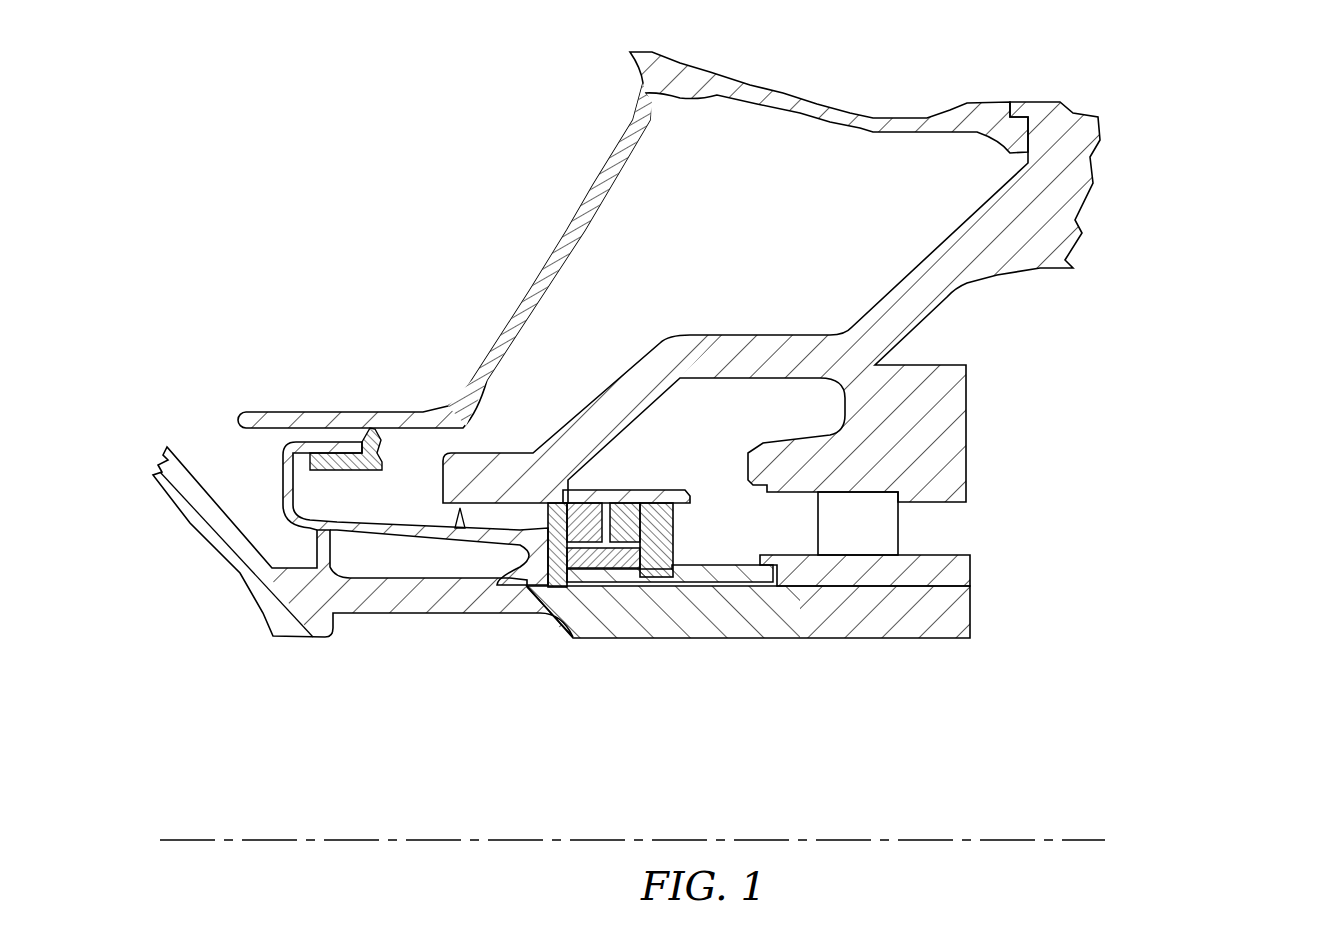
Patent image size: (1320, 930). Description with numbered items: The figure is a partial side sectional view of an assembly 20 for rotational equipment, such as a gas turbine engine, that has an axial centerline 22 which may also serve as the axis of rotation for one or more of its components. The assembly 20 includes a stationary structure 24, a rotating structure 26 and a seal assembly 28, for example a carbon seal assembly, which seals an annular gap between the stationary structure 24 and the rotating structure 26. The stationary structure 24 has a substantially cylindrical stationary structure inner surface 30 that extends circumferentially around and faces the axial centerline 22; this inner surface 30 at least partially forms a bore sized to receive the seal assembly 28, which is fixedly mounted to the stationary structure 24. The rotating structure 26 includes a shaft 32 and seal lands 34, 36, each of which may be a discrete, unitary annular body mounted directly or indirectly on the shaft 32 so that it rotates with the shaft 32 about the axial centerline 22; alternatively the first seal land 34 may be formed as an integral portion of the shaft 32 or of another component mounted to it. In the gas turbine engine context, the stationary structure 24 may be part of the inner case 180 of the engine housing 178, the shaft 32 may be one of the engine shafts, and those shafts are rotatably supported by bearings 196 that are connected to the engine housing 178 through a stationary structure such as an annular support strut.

The assembly 20 is at (345, 148).
The axial centerline 22 is at (1088, 840).
The stationary structure 24 is at (607, 373).
The rotating structure 26 is at (455, 622).
The seal assembly 28 is at (633, 496).
The stationary structure inner surface 30 is at (500, 507).
The shaft 32 is at (933, 640).
The first seal land 34 is at (708, 560).
The seal land 36 is at (558, 592).
The engine housing 178 is at (748, 277).
The inner case 180 is at (850, 286).
The bearings 196 is at (920, 528).